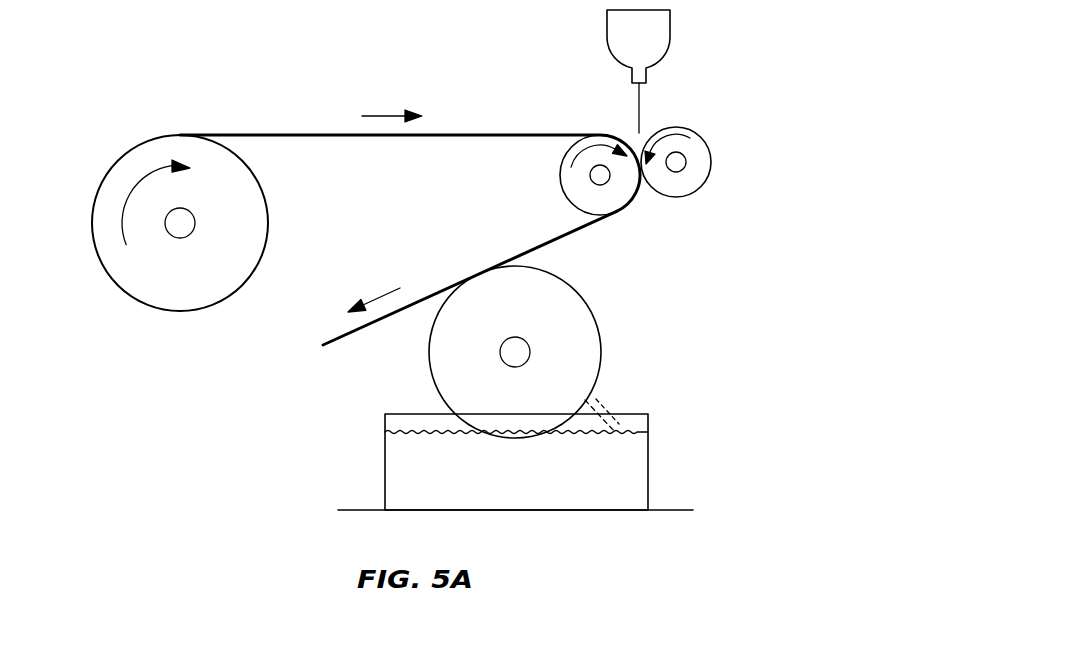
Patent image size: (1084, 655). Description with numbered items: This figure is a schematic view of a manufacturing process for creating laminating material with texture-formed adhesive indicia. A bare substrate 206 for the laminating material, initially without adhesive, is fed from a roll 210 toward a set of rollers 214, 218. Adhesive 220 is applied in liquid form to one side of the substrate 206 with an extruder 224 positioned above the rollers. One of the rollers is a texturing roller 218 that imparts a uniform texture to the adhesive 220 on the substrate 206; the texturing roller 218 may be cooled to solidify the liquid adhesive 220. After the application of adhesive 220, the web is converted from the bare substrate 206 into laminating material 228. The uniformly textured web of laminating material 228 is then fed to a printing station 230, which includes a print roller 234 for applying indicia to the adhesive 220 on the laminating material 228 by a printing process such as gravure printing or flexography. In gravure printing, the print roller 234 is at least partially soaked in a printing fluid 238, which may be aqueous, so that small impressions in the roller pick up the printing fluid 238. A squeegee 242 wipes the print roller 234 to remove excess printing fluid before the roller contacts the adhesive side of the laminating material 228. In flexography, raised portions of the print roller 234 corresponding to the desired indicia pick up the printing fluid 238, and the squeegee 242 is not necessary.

The substrate 206 is at (280, 135).
The roll 210 is at (162, 290).
The roller 214 is at (566, 192).
The texturing roller 218 is at (704, 183).
The adhesive 220 is at (638, 103).
The extruder 224 is at (672, 30).
The laminating material 228 is at (572, 235).
The printing station 230 is at (348, 408).
The print roller 234 is at (598, 322).
The printing fluid 238 is at (448, 489).
The squeegee 242 is at (618, 412).